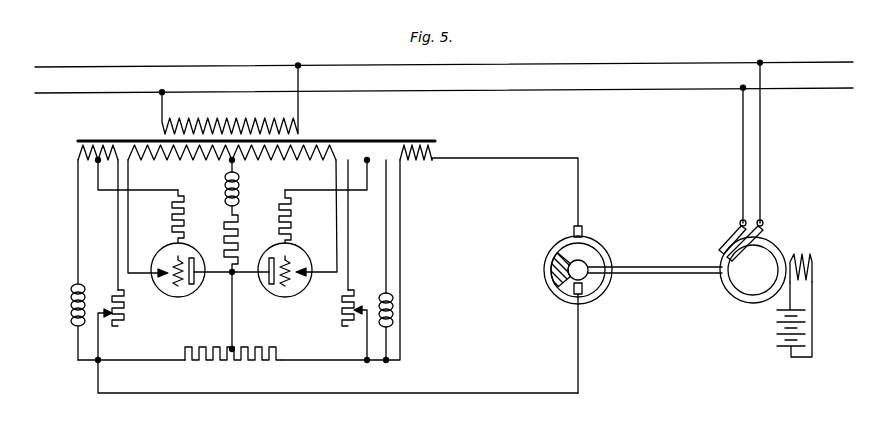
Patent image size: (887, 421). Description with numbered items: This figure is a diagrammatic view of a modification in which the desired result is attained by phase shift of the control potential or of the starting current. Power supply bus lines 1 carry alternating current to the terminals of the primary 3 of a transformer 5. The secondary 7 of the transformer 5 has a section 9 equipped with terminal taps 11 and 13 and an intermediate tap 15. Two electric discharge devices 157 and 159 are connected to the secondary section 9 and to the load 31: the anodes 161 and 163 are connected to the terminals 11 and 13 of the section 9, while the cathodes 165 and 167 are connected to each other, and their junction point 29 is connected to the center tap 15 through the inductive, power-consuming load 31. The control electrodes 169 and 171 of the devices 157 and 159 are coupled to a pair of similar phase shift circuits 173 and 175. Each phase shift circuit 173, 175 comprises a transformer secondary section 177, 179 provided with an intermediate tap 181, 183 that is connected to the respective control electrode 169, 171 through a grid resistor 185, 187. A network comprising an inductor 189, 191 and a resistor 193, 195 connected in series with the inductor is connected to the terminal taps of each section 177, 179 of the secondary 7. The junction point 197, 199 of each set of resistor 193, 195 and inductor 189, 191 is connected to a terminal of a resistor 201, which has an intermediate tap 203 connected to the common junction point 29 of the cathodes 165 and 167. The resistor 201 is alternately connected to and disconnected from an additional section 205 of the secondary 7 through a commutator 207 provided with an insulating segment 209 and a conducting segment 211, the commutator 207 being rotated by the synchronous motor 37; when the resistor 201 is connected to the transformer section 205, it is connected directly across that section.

The power supply bus lines 1 is at (432, 92).
The primary 3 is at (301, 131).
The transformer 5 is at (398, 134).
The secondary 7 is at (79, 151).
The section 9 is at (172, 160).
The terminal tap 11 is at (131, 160).
The terminal tap 13 is at (334, 162).
The intermediate tap 15 is at (233, 162).
The junction point 29 is at (238, 262).
The inductive, power-consuming load 31 is at (262, 206).
The synchronous motor 37 is at (758, 334).
The electric discharge device 157 is at (164, 259).
The electric discharge device 159 is at (300, 256).
The anode 161 is at (154, 280).
The anode 163 is at (304, 291).
The cathode 165 is at (199, 290).
The cathode 167 is at (266, 291).
The control electrode 169 is at (180, 262).
The control electrode 171 is at (286, 258).
The phase shift circuit 173 is at (106, 235).
The phase shift circuit 175 is at (374, 241).
The transformer secondary section 177 is at (58, 260).
The transformer secondary section 179 is at (403, 158).
The intermediate tap 181 is at (95, 164).
The intermediate tap 183 is at (332, 188).
The grid resistor 185 is at (184, 214).
The grid resistor 187 is at (279, 221).
The inductor 189 is at (70, 307).
The inductor 191 is at (384, 300).
The resistor 193 is at (125, 312).
The resistor 195 is at (350, 327).
The junction point 197 is at (96, 362).
The junction point 199 is at (368, 362).
The resistor 201 is at (224, 362).
The intermediate tap 203 is at (234, 347).
The additional section 205 is at (433, 161).
The commutator 207 is at (628, 313).
The insulating segment 209 is at (590, 244).
The conducting segment 211 is at (556, 292).